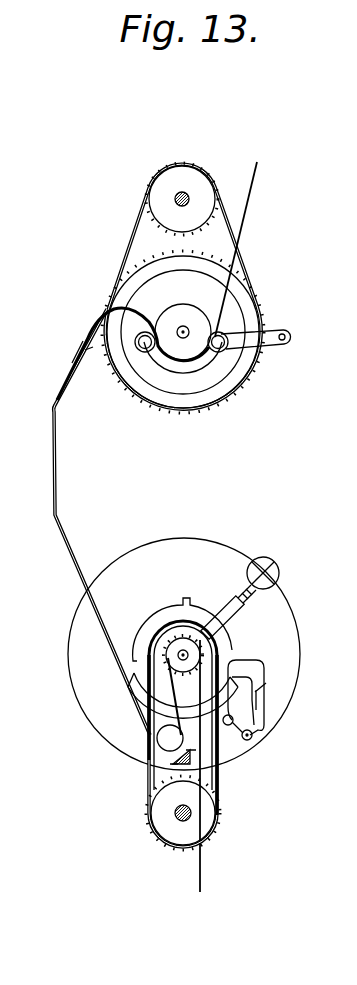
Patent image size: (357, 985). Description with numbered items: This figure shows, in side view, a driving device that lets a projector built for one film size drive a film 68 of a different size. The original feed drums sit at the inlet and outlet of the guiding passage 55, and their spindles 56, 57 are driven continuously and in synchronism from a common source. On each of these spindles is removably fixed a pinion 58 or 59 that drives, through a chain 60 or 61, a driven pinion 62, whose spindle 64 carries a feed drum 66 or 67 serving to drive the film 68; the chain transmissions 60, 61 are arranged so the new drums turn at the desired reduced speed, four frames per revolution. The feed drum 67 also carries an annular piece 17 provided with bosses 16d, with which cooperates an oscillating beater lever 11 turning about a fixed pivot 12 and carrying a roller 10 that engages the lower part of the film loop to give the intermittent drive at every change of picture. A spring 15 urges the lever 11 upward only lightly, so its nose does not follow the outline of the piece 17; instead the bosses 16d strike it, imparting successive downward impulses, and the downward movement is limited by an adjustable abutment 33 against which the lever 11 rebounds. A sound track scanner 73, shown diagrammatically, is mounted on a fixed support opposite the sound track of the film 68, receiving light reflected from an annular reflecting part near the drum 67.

The roller 10 is at (170, 738).
The beater lever 11 is at (253, 680).
The pivot 12 is at (251, 736).
The spring 15 is at (258, 712).
The bosses 16d is at (233, 662).
The annular piece 17 is at (198, 613).
The adjustable abutment 33 is at (170, 762).
The guiding passage 55 is at (60, 433).
The spindle 56 is at (170, 199).
The spindle 57 is at (180, 815).
The pinion 58 is at (192, 173).
The pinion 59 is at (207, 820).
The chain 60 is at (230, 272).
The chain 61 is at (215, 770).
The pinion 62 is at (225, 372).
The spindle 64 is at (190, 330).
The feed drum 66 is at (192, 345).
The feed drum 67 is at (178, 650).
The film 68 is at (253, 207).
The sound track scanner 73 is at (225, 598).